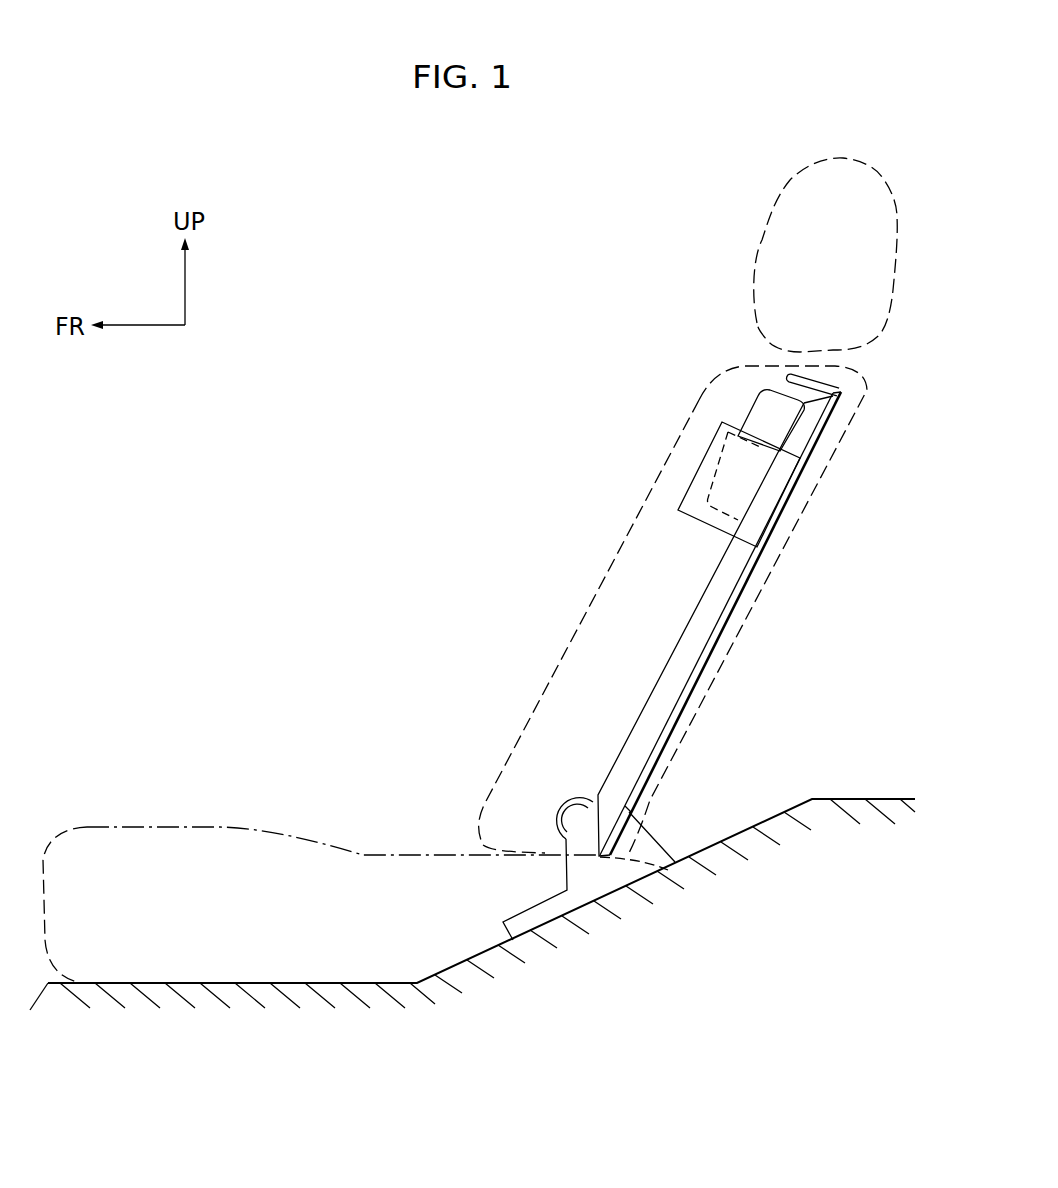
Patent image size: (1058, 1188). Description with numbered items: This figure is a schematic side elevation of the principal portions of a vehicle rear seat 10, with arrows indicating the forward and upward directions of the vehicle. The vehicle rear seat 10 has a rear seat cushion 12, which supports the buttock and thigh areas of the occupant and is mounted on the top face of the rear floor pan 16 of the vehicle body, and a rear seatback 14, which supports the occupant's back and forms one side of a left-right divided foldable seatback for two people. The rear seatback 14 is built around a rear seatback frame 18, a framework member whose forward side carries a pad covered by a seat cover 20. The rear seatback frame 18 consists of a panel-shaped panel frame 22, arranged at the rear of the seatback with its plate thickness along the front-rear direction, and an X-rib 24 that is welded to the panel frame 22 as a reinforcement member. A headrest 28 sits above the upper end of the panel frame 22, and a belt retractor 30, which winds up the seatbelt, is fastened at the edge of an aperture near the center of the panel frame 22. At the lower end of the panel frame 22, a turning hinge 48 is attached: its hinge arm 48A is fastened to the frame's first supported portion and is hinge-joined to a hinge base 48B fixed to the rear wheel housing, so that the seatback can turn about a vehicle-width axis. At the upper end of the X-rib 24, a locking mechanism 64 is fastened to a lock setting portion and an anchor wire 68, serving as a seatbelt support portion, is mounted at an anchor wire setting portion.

The vehicle rear seat 10 is at (416, 440).
The rear seat cushion 12 is at (213, 828).
The rear seatback 14 is at (594, 600).
The rear floor pan 16 is at (851, 797).
The rear seatback frame 18 is at (650, 698).
The seat cover 20 is at (530, 715).
The panel frame 22 is at (735, 623).
The X-rib 24 is at (700, 587).
The headrest 28 is at (789, 203).
The belt retractor 30 is at (695, 480).
The turning hinge 48 is at (656, 840).
The hinge arm 48A is at (555, 797).
The hinge base 48B is at (506, 922).
The locking mechanism 64 is at (745, 417).
The anchor wire 68 is at (787, 378).